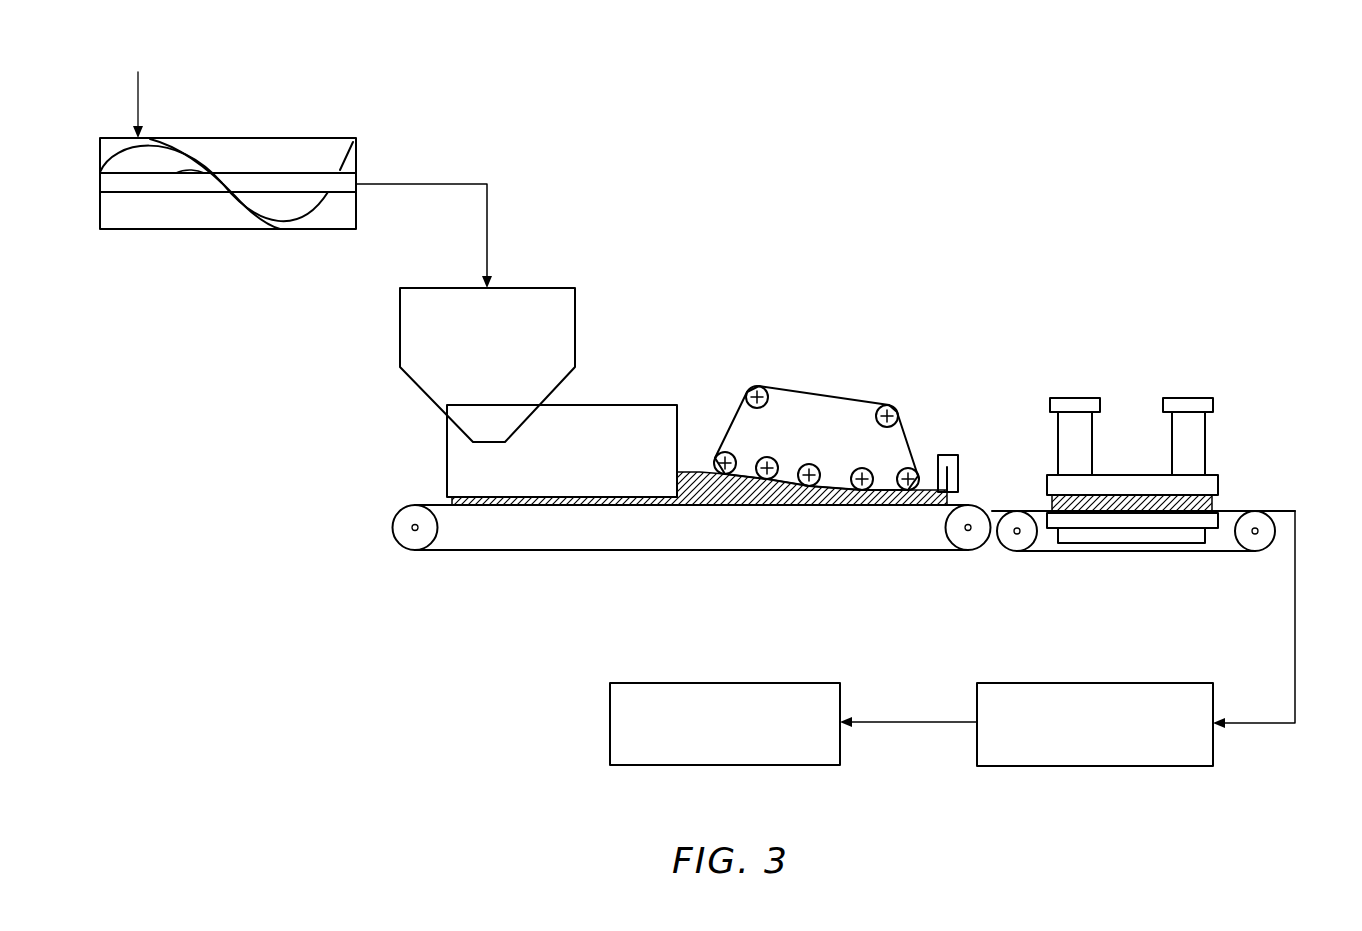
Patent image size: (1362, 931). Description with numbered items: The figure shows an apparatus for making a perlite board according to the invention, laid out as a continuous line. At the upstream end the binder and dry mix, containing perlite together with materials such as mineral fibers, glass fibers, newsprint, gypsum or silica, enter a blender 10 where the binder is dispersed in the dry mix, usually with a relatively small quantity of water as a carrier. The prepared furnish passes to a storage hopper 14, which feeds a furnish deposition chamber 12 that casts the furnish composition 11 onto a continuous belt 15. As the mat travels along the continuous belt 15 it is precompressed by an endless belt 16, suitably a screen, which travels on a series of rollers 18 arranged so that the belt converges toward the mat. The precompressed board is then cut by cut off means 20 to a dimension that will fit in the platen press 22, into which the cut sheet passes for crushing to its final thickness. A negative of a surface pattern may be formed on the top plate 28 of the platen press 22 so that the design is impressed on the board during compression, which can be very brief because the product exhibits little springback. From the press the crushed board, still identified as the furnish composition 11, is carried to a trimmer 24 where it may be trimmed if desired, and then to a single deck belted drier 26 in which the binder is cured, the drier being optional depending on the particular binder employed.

The blender 10 is at (132, 229).
The furnish composition 11 is at (720, 500).
The furnish deposition chamber 12 is at (617, 405).
The storage hopper 14 is at (575, 333).
The continuous belt 15 is at (523, 507).
The endless belt 16 is at (868, 400).
The rollers 18 is at (815, 463).
The cut off means 20 is at (958, 458).
The platen press 22 is at (1232, 454).
The trimmer 24 is at (1035, 683).
The single deck belted drier 26 is at (698, 683).
The top plate 28 is at (1218, 485).